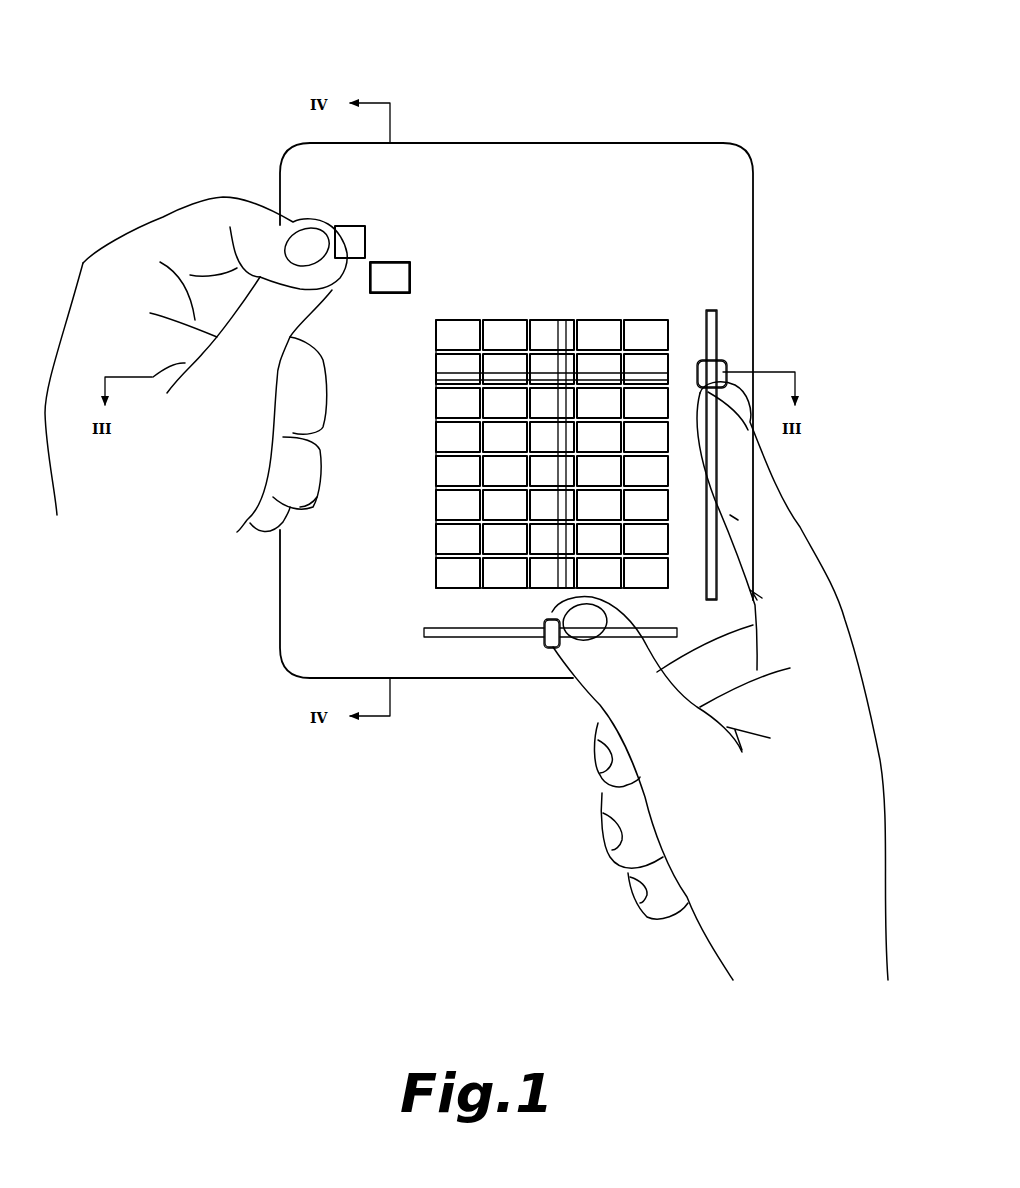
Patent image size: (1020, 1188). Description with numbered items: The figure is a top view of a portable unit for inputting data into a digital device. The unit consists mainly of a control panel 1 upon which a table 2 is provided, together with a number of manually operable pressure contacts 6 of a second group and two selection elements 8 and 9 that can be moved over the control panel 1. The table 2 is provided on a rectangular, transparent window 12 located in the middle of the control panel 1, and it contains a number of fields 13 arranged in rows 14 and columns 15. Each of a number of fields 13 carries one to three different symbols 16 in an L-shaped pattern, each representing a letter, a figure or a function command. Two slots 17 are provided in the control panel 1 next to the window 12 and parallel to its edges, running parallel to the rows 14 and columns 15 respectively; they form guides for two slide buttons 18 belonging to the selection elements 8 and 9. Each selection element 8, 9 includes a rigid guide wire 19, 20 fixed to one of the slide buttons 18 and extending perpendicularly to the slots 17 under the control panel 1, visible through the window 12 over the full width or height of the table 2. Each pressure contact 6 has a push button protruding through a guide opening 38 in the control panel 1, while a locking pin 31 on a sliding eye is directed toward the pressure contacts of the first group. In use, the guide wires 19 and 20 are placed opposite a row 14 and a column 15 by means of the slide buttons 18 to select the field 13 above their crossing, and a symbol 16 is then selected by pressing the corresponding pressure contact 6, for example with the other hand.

The control panel 1 is at (710, 152).
The table 2 is at (676, 303).
The pressure contact 6 is at (380, 262).
The selection element 8 is at (731, 366).
The selection element 9 is at (543, 658).
The transparent window 12 is at (517, 320).
The field 13 is at (436, 545).
The row 14 is at (433, 578).
The column 15 is at (460, 596).
The symbol 16 is at (633, 320).
The slot 17 is at (710, 582).
The slide button 18 is at (719, 377).
The guide wire 19 is at (717, 327).
The guide wire 20 is at (436, 592).
The locking pin 31 is at (412, 262).
The guide opening 38 is at (345, 226).